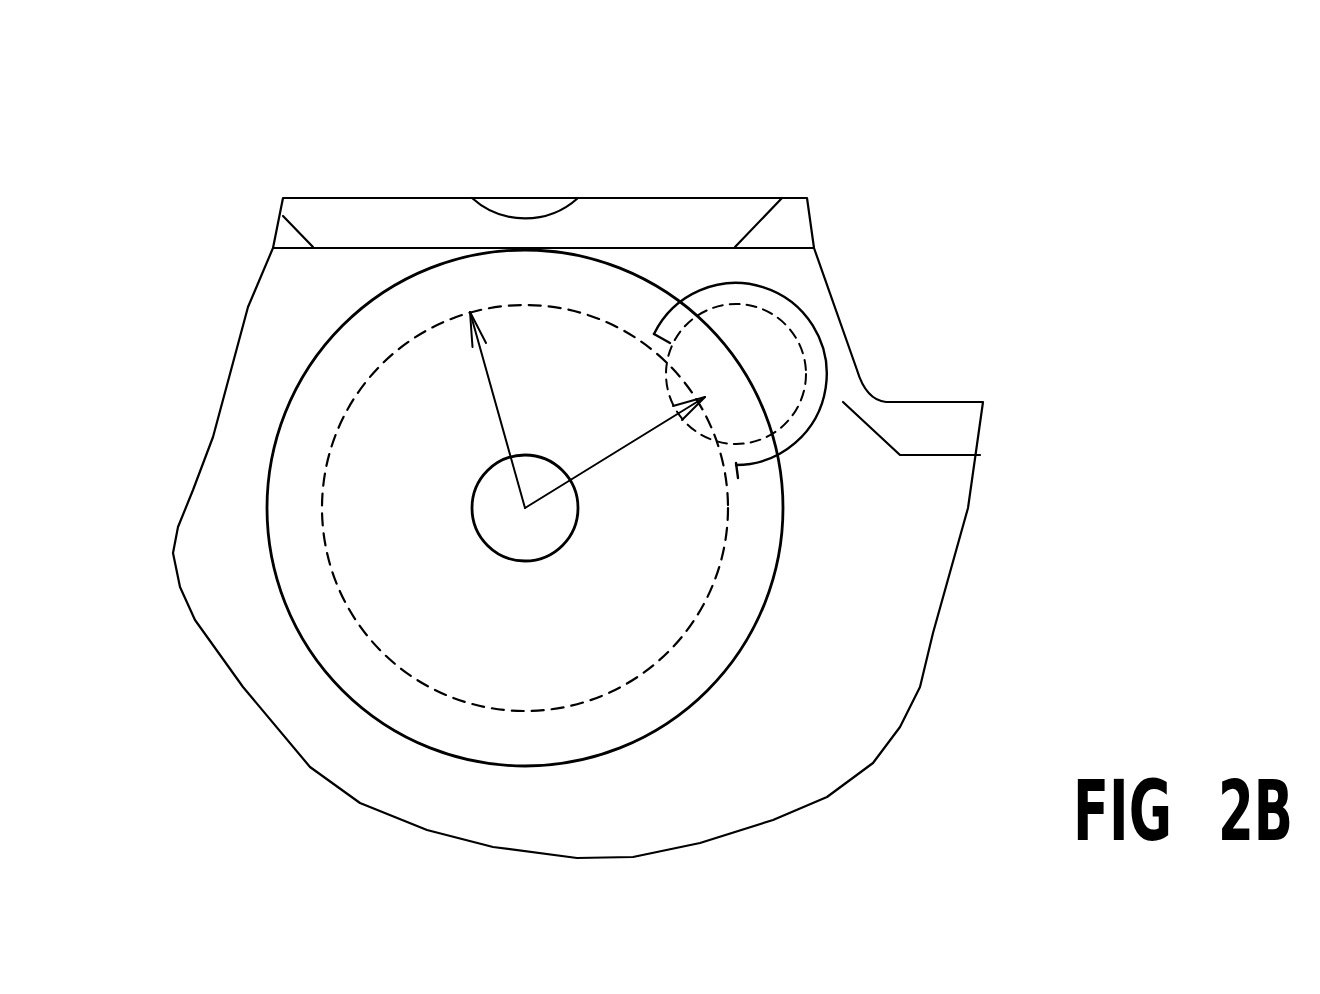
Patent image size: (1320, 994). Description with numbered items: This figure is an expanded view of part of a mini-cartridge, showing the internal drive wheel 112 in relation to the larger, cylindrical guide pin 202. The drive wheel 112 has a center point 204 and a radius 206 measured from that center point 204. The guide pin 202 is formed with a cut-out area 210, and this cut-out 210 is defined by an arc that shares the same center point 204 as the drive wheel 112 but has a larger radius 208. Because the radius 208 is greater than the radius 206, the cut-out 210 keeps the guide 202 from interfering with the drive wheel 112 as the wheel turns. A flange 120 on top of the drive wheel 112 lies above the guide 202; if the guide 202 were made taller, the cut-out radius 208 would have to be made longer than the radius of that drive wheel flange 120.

The drive wheel 112 is at (410, 340).
The flange 120 is at (313, 362).
The guide pin 202 is at (800, 310).
The center point 204 is at (517, 553).
The radius 206 is at (497, 437).
The radius 208 is at (632, 440).
The cut-out area 210 is at (738, 478).